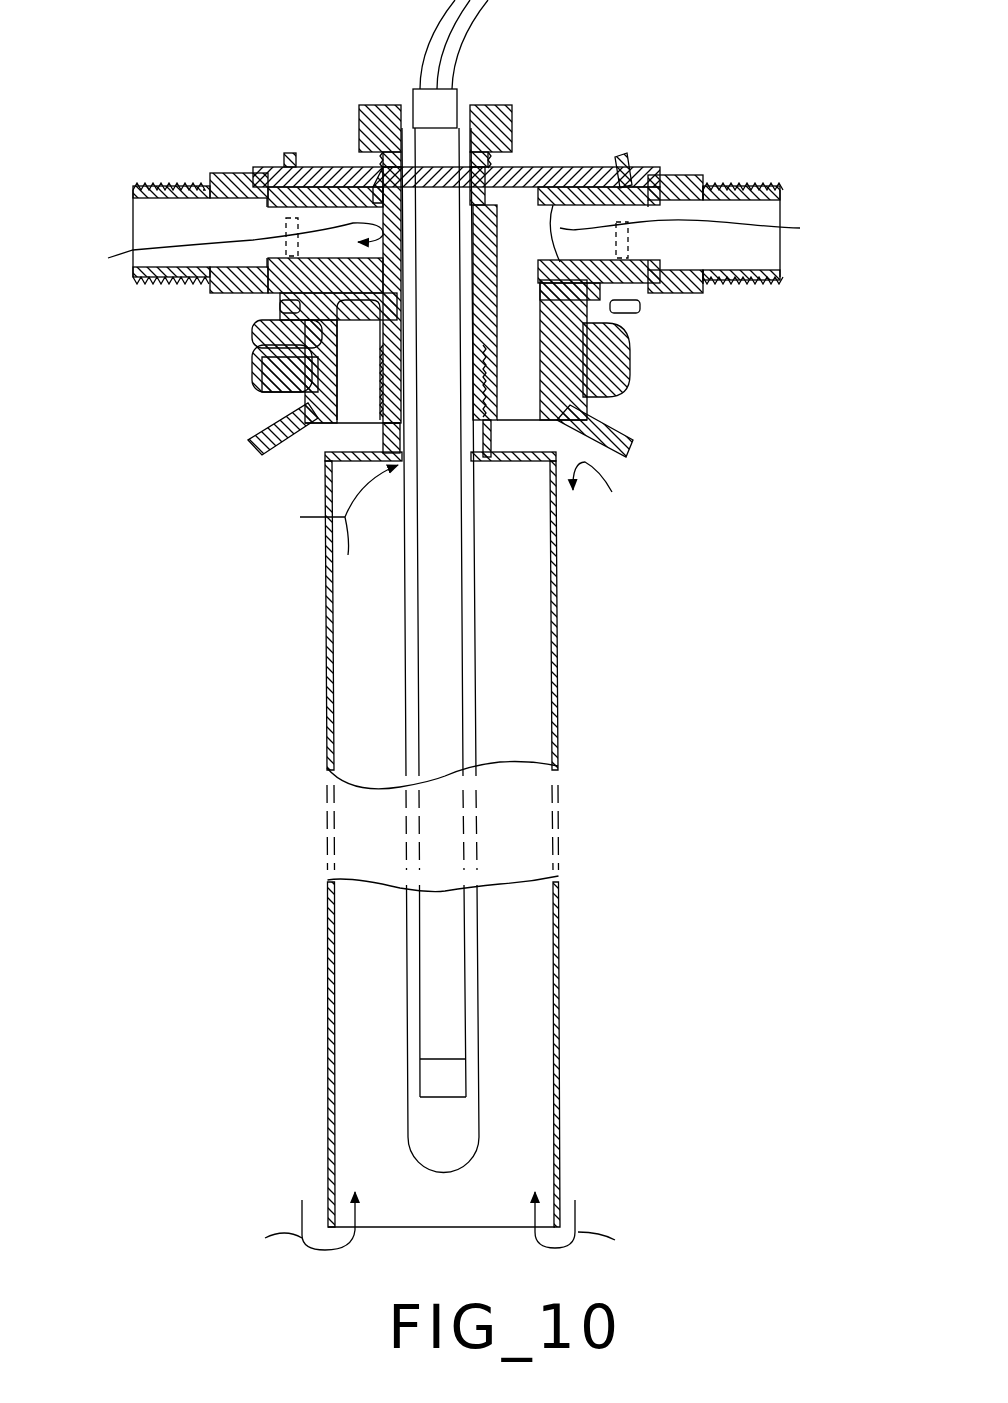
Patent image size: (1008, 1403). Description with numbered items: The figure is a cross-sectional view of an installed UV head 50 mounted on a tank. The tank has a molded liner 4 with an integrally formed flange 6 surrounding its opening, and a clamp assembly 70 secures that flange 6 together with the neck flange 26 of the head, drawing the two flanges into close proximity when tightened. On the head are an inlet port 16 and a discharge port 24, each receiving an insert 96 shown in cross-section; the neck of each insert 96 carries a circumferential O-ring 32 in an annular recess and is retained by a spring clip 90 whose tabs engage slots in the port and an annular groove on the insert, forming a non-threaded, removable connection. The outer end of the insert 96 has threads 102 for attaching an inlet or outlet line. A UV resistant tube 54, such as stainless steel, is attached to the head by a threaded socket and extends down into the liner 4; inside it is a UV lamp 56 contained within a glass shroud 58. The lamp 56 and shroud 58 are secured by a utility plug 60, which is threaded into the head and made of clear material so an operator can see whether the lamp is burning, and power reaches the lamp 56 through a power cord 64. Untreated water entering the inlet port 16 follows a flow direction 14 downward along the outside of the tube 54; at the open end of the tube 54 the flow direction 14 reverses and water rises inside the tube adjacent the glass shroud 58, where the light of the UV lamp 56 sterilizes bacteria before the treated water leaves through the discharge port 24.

The liner 4 is at (300, 452).
The flange 6 is at (305, 367).
The flow direction 14 is at (454, 729).
The inlet port 16 is at (590, 165).
The discharge port 24 is at (272, 172).
The neck flange 26 is at (258, 338).
The O-ring 32 is at (305, 403).
The UV head 50 is at (519, 280).
The UV resistant tube 54 is at (322, 630).
The UV lamp 56 is at (418, 1030).
The glass shroud 58 is at (404, 985).
The utility plug 60 is at (510, 122).
The power cord 64 is at (433, 50).
The clamp assembly 70 is at (255, 357).
The spring clip 90 is at (290, 150).
The insert 96 is at (133, 222).
The threads 102 is at (755, 283).